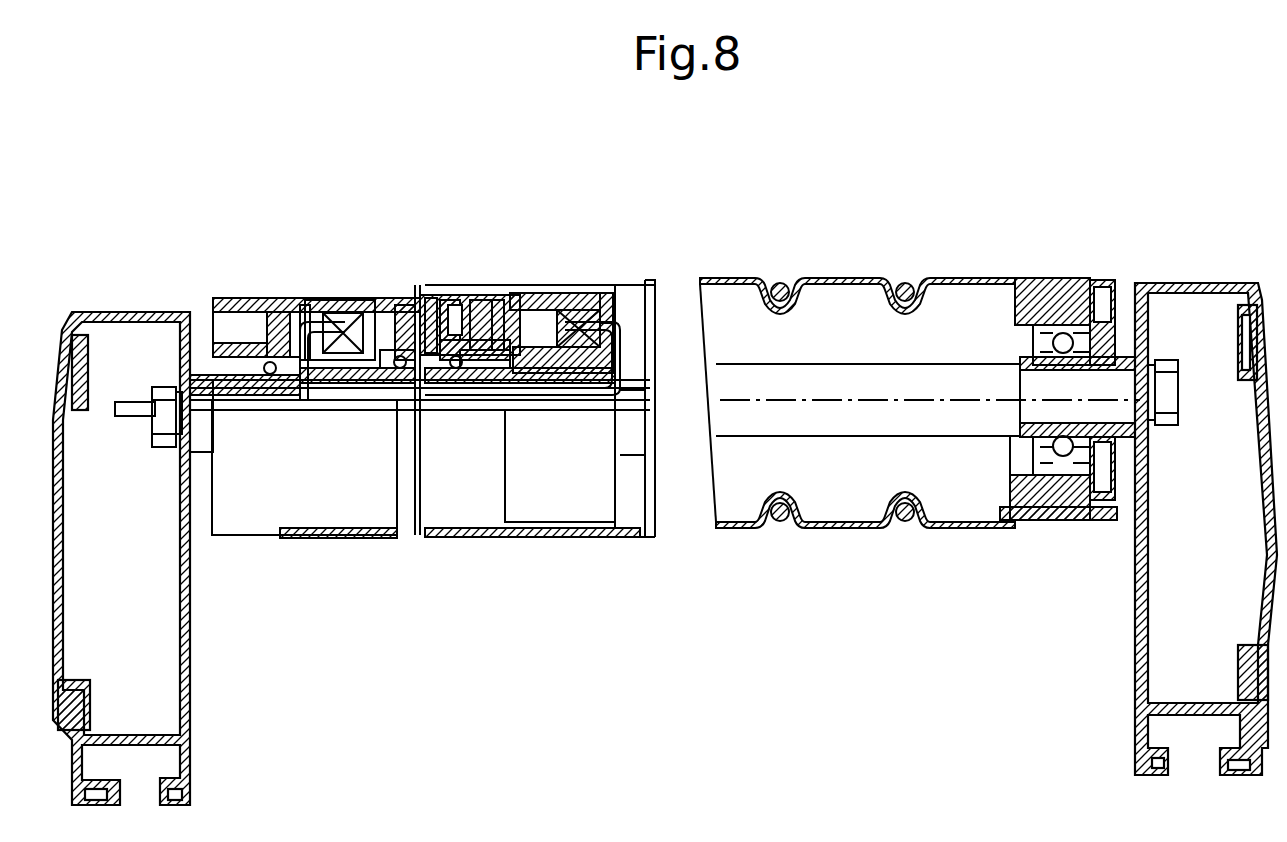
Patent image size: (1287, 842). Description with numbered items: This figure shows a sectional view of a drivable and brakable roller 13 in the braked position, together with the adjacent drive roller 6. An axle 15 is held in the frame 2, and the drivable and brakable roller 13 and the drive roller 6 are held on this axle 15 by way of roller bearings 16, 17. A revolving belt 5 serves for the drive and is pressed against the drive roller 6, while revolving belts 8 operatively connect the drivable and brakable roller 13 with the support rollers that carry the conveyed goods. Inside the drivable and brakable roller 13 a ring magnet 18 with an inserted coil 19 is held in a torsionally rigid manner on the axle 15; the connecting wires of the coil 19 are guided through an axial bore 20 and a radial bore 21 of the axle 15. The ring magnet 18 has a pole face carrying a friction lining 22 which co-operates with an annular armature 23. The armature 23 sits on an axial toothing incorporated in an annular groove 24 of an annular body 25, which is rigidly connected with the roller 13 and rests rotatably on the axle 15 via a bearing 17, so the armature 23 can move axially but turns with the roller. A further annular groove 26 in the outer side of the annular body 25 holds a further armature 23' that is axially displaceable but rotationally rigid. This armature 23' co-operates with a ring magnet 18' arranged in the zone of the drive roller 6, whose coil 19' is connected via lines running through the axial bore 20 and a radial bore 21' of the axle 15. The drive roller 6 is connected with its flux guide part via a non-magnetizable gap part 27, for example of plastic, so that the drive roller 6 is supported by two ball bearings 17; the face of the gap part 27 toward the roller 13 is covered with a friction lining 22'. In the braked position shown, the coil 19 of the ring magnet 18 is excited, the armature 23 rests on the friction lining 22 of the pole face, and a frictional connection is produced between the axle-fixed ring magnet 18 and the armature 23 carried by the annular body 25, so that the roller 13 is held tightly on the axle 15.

The frame 2 is at (135, 688).
The revolving belt 5 is at (355, 540).
The drive roller 6 is at (240, 298).
The revolving belts 8 is at (900, 290).
The drivable and brakable roller 13 is at (800, 345).
The axle 15 is at (930, 385).
The roller bearing 16 is at (1050, 335).
The roller bearing 17 is at (289, 345).
The ring magnet 18 is at (561, 299).
The ring magnet 18' is at (308, 484).
The coil 19 is at (635, 277).
The coil 19' is at (284, 365).
The axial bore 20 is at (540, 410).
The radial bore 21 is at (542, 461).
The radial bore 21' is at (294, 488).
The friction lining 22 is at (492, 262).
The friction lining 22' is at (440, 238).
The armature 23 is at (495, 501).
The armature 23' is at (400, 478).
The annular groove 24 is at (485, 345).
The annular body 25 is at (500, 305).
The annular groove 26 is at (433, 410).
The gap part 27 is at (415, 335).